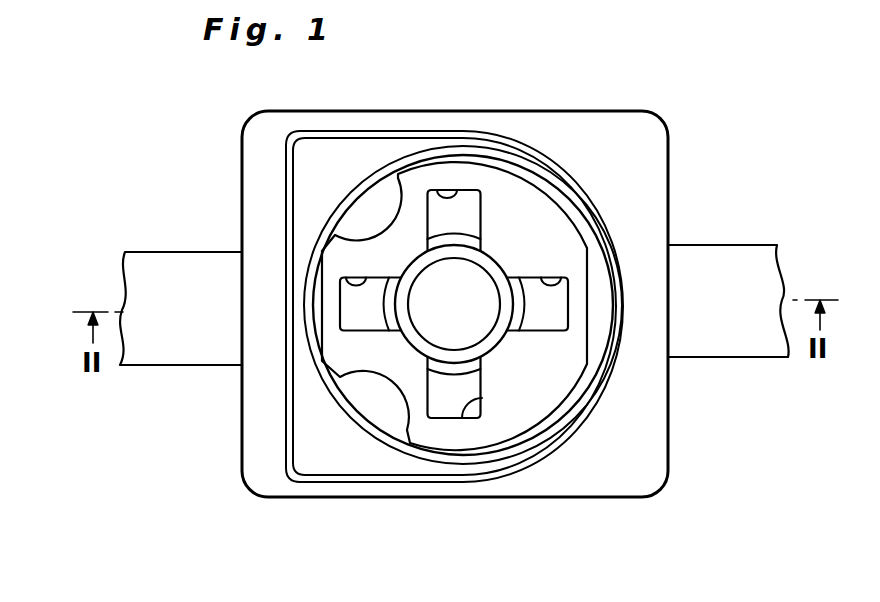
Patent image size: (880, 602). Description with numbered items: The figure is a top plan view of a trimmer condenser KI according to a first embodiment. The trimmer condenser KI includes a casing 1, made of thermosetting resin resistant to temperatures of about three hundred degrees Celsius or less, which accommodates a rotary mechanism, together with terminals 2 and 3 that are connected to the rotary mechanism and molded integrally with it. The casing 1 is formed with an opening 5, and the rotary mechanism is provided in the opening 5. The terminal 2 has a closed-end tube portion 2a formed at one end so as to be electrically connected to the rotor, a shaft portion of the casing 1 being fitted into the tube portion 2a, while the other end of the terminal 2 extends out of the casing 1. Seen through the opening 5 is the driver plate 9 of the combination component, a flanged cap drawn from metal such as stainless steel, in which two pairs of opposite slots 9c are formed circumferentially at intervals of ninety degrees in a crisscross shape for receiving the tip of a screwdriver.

The casing 1 is at (625, 457).
The terminal 2 is at (742, 342).
The closed-end tube portion 2a is at (430, 320).
The terminal 3 is at (172, 347).
The opening 5 is at (360, 397).
The driver plate 9 is at (527, 402).
The slots 9c is at (461, 190).
The trimmer condenser KI is at (655, 78).